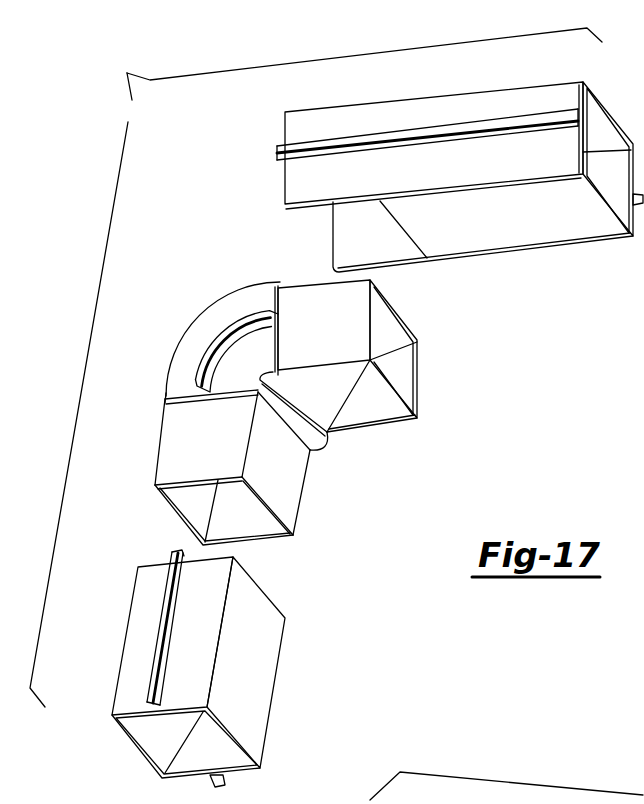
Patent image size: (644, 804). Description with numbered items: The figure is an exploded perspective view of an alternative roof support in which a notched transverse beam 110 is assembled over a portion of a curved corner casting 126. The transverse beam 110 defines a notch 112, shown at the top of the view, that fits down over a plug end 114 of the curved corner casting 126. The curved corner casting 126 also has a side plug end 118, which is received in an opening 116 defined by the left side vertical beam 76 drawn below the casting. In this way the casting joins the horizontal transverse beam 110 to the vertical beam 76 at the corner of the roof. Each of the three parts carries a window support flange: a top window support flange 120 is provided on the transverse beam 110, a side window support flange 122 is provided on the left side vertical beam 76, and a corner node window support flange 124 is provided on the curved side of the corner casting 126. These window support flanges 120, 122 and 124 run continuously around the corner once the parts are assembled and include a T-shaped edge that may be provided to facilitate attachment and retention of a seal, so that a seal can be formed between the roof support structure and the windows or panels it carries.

The notched transverse beam 110 is at (576, 97).
The notch 112 is at (396, 241).
The top window support flange 120 is at (498, 127).
The curved corner casting 126 is at (193, 347).
The corner node window support flange 124 is at (238, 327).
The plug end 114 is at (370, 413).
The side plug end 118 is at (180, 432).
The opening 116 is at (260, 589).
The left side vertical beam 76 is at (253, 693).
The side window support flange 122 is at (163, 641).